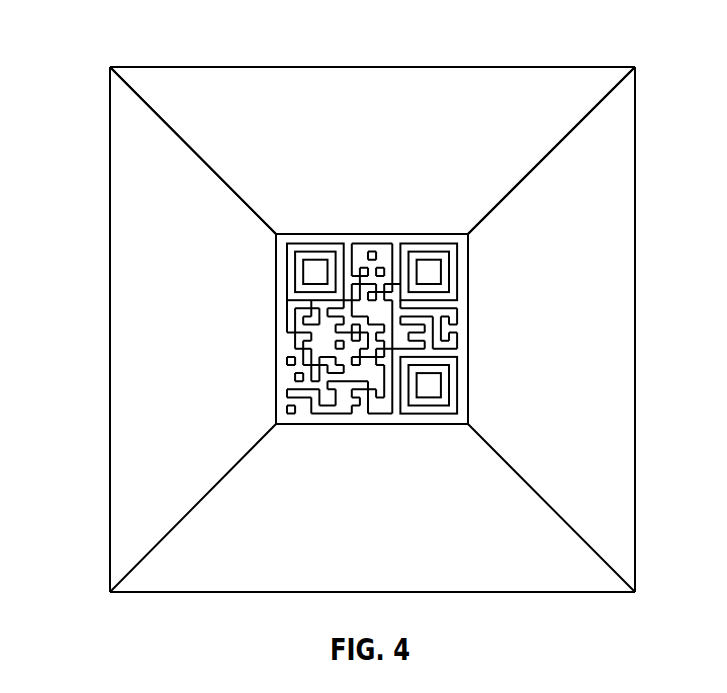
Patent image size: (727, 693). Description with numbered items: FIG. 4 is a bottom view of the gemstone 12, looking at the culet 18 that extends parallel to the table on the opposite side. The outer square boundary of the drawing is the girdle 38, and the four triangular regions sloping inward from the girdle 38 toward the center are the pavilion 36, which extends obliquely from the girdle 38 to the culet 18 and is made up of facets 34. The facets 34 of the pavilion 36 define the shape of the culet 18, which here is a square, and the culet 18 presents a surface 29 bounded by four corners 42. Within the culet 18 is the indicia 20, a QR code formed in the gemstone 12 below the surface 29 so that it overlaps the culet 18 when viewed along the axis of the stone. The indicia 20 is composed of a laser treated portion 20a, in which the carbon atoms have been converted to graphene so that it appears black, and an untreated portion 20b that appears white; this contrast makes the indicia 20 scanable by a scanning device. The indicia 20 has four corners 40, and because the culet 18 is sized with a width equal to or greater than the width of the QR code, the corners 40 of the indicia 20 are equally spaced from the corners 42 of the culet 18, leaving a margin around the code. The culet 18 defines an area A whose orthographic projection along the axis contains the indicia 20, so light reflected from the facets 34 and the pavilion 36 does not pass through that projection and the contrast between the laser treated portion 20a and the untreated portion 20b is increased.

The gemstone 12 is at (148, 42).
The girdle 38 is at (110, 115).
The pavilion 36 is at (387, 89).
The facets 34 is at (467, 102).
The indicia 20 is at (320, 238).
The corners of the culet 42 is at (290, 233).
The surface of the culet 29 is at (282, 418).
The culet 18 is at (367, 426).
The corners of the indicia 40 is at (286, 275).
The laser treated portion 20a is at (417, 247).
The untreated portion 20b is at (443, 247).
The area A is at (437, 418).